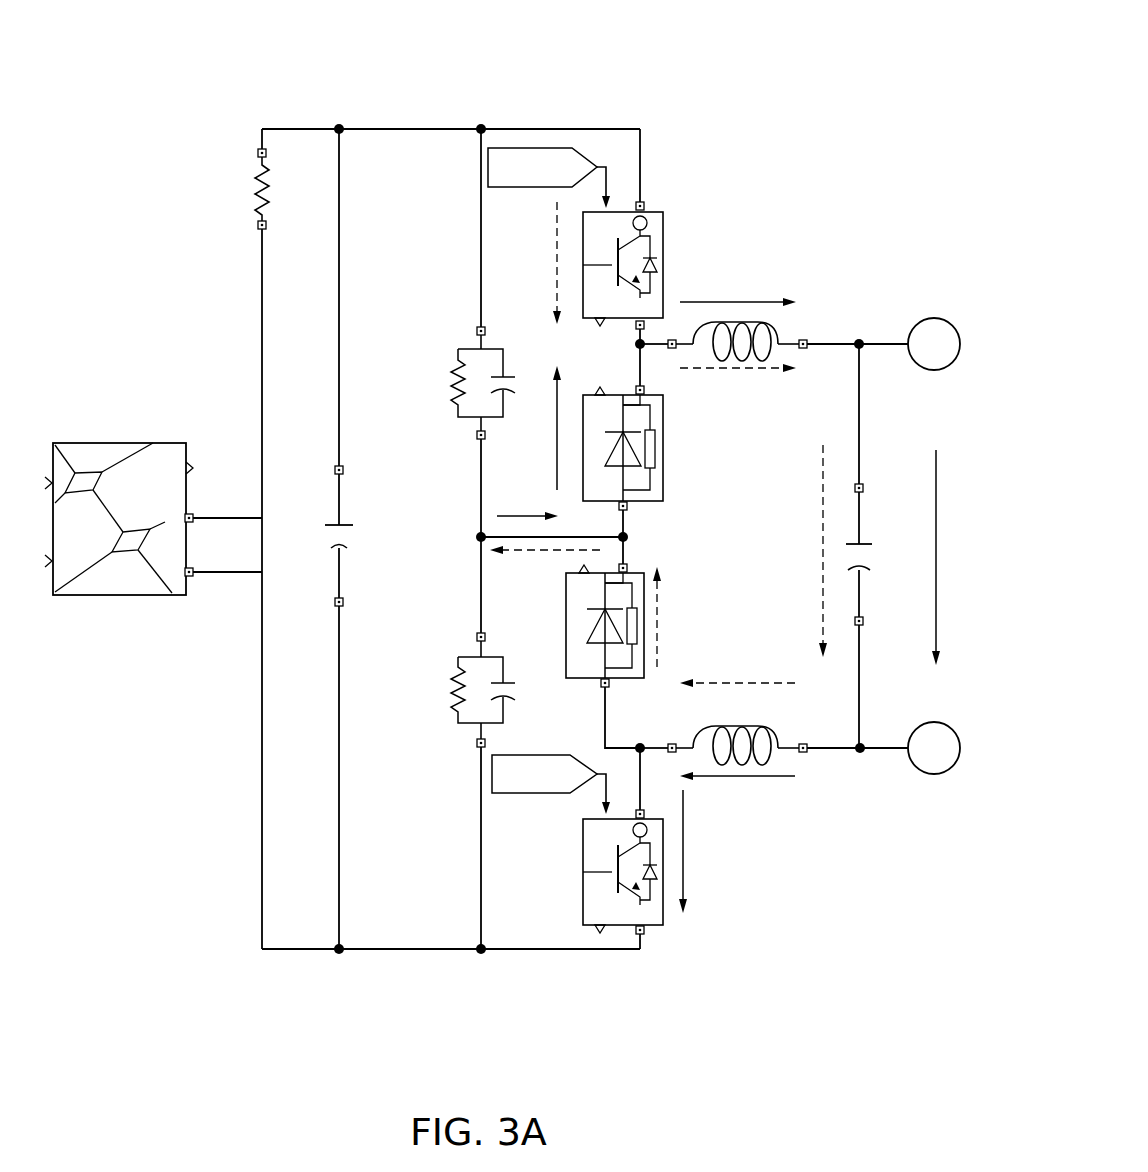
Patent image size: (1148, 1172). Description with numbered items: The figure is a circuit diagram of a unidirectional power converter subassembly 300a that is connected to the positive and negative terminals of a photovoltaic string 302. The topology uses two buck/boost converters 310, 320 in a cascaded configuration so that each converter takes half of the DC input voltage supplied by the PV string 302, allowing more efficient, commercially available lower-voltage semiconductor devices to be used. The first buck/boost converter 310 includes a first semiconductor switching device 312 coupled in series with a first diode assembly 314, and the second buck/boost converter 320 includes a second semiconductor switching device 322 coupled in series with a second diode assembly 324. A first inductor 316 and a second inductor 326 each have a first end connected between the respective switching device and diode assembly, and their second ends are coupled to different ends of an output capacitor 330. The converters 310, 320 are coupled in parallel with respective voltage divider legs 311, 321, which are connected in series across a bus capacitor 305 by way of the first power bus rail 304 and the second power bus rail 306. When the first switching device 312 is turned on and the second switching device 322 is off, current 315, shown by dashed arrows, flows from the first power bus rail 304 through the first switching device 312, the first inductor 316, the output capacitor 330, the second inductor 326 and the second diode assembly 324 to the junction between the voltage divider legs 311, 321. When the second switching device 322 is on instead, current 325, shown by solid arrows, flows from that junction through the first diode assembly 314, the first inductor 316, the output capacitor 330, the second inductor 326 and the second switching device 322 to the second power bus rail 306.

The unidirectional power converter subassembly 300a is at (830, 72).
The photovoltaic (PV) string 302 is at (118, 443).
The first power bus rail 304 is at (405, 127).
The bus capacitor 305 is at (340, 546).
The second power bus rail 306 is at (404, 952).
The first buck/boost converter 310 is at (726, 258).
The first voltage divider leg 311 is at (432, 362).
The first semiconductor switching device 312 is at (657, 212).
The first diode assembly 314 is at (663, 422).
The current 315 is at (823, 508).
The first inductor 316 is at (779, 332).
The second buck/boost converter 320 is at (768, 856).
The second voltage divider leg 321 is at (432, 669).
The second semiconductor switching device 322 is at (663, 917).
The second diode assembly 324 is at (566, 603).
The current 325 is at (936, 582).
The second inductor 326 is at (779, 742).
The output capacitor 330 is at (870, 540).